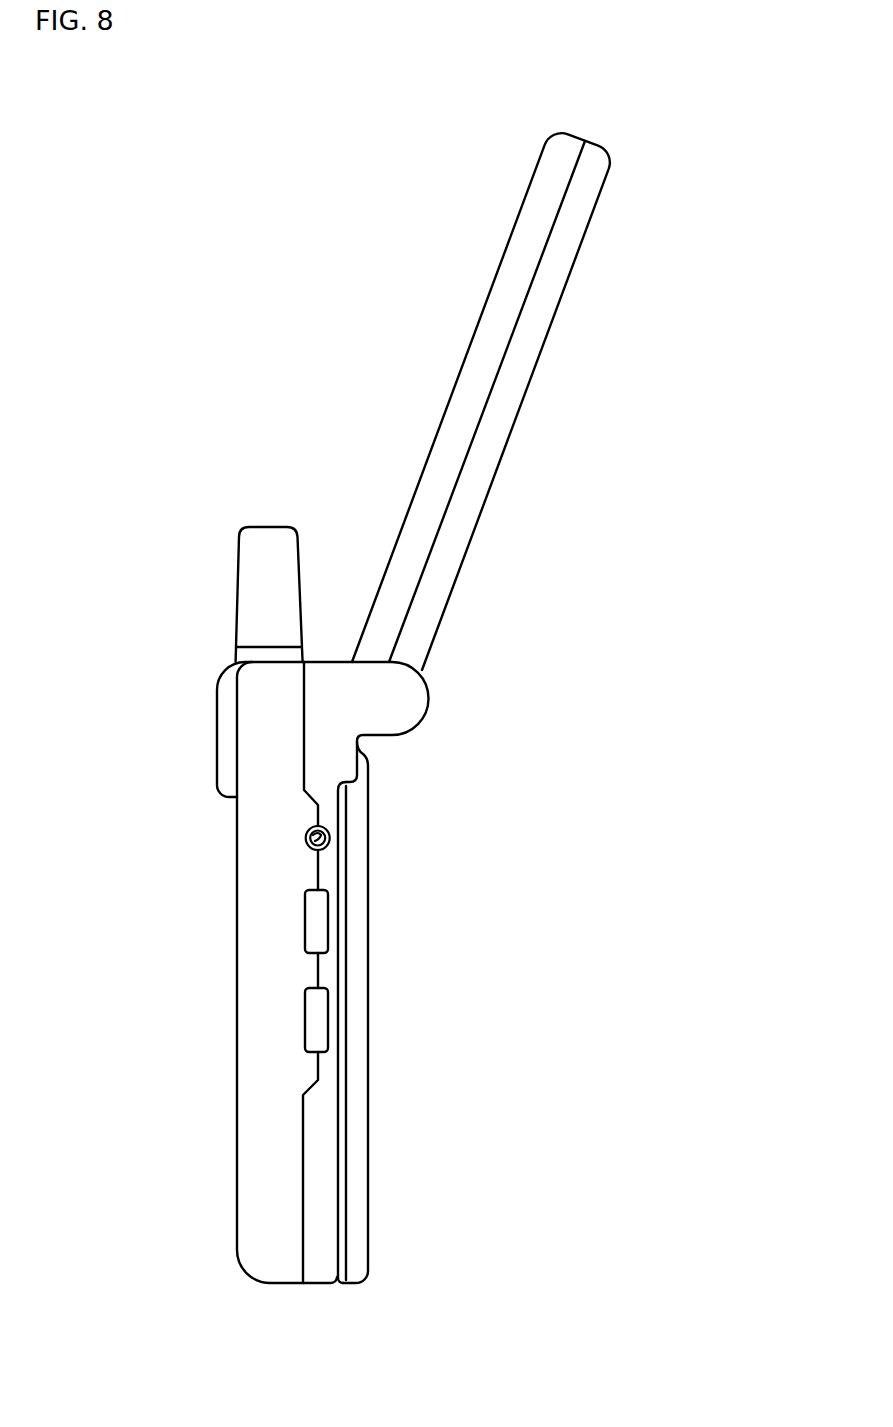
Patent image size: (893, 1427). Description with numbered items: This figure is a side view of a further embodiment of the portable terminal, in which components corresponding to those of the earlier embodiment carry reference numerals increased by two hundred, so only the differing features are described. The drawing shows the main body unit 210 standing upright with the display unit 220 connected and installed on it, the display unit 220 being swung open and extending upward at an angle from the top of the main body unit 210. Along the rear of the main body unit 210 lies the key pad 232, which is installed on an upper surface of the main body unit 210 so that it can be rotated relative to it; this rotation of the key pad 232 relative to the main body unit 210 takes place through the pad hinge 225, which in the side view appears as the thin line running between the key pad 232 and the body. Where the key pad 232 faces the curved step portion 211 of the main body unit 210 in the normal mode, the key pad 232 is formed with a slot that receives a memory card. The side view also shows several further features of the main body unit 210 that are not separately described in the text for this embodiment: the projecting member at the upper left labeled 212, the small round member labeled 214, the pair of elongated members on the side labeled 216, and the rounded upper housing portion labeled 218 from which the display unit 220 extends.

The main body unit 210 is at (255, 1150).
The curved step portion 211 is at (352, 797).
The antenna 212 is at (258, 590).
The camera button 214 is at (305, 842).
The side keys 216 is at (316, 920).
The hinge housing 218 is at (402, 700).
The display unit 220 is at (537, 362).
The pad hinge 225 is at (340, 973).
The key pad 232 is at (357, 1213).